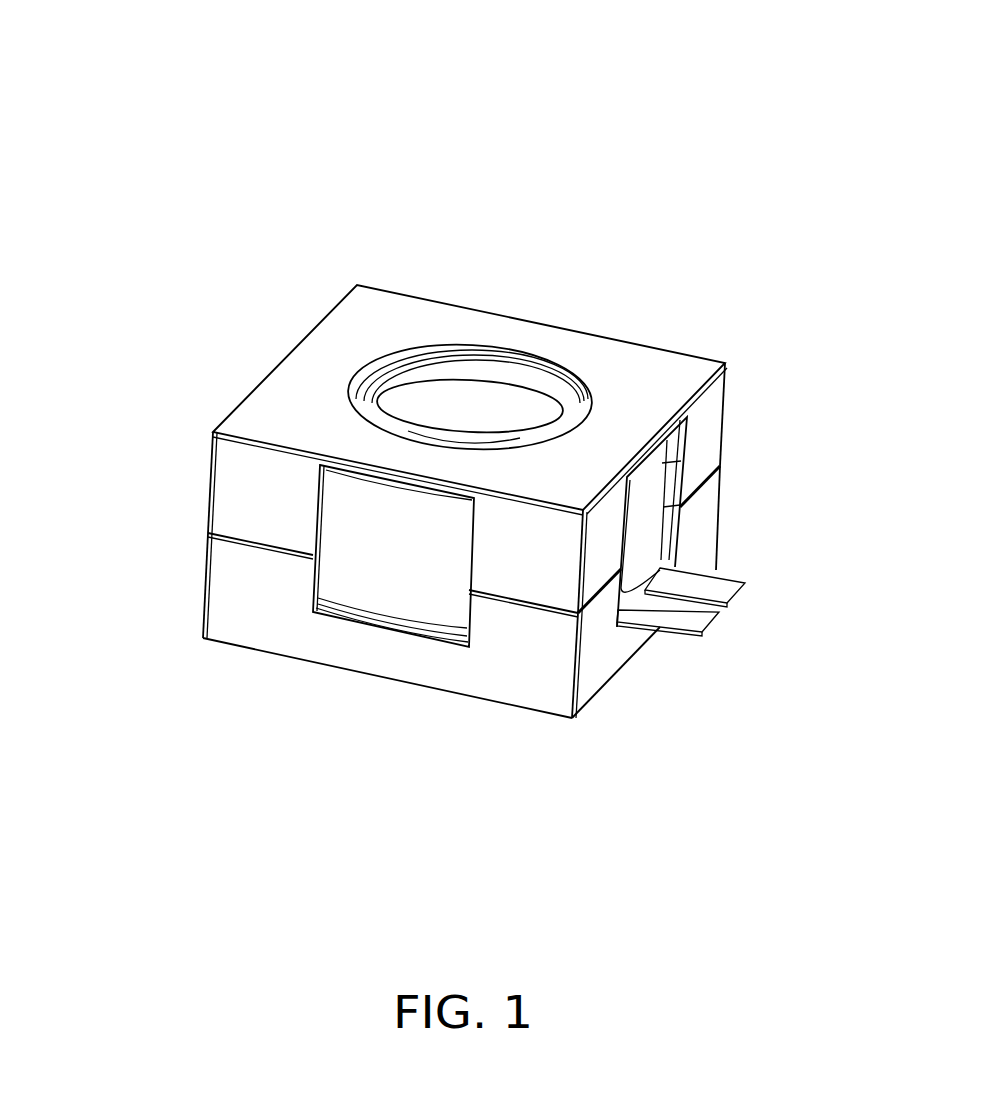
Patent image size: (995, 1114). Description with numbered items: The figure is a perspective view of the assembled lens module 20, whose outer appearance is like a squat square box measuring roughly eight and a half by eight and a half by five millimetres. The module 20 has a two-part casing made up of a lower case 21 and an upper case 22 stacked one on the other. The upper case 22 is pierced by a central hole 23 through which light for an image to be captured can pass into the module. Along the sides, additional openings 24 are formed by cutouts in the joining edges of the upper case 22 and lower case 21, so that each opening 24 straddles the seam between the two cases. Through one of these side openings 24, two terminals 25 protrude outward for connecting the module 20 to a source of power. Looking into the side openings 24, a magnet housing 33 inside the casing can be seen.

The lens module 20 is at (272, 200).
The lower case 21 is at (240, 588).
The upper case 22 is at (240, 495).
The central hole 23 is at (512, 407).
The side openings 24 is at (672, 465).
The terminals 25 is at (725, 588).
The magnet housing 33 is at (645, 527).